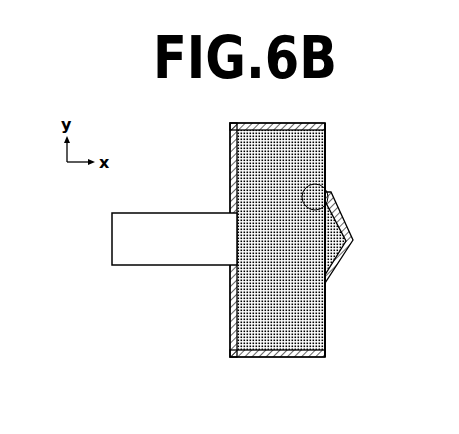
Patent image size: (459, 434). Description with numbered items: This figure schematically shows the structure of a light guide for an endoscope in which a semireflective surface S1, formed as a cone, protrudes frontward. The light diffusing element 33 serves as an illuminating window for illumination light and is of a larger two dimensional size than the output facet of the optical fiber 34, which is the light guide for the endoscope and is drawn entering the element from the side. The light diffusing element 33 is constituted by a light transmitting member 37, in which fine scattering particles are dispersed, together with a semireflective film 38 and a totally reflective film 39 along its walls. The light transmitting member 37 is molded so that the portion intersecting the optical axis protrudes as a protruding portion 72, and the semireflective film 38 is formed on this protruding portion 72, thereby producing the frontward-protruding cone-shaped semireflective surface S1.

The light diffusing element 33 is at (289, 268).
The optical fiber 34 is at (131, 258).
The light transmitting member 37 is at (250, 289).
The semireflective film 38 is at (341, 268).
The totally reflective film 39 is at (233, 323).
The protruding portion 72 is at (372, 207).
The semireflective surface S1 is at (321, 184).